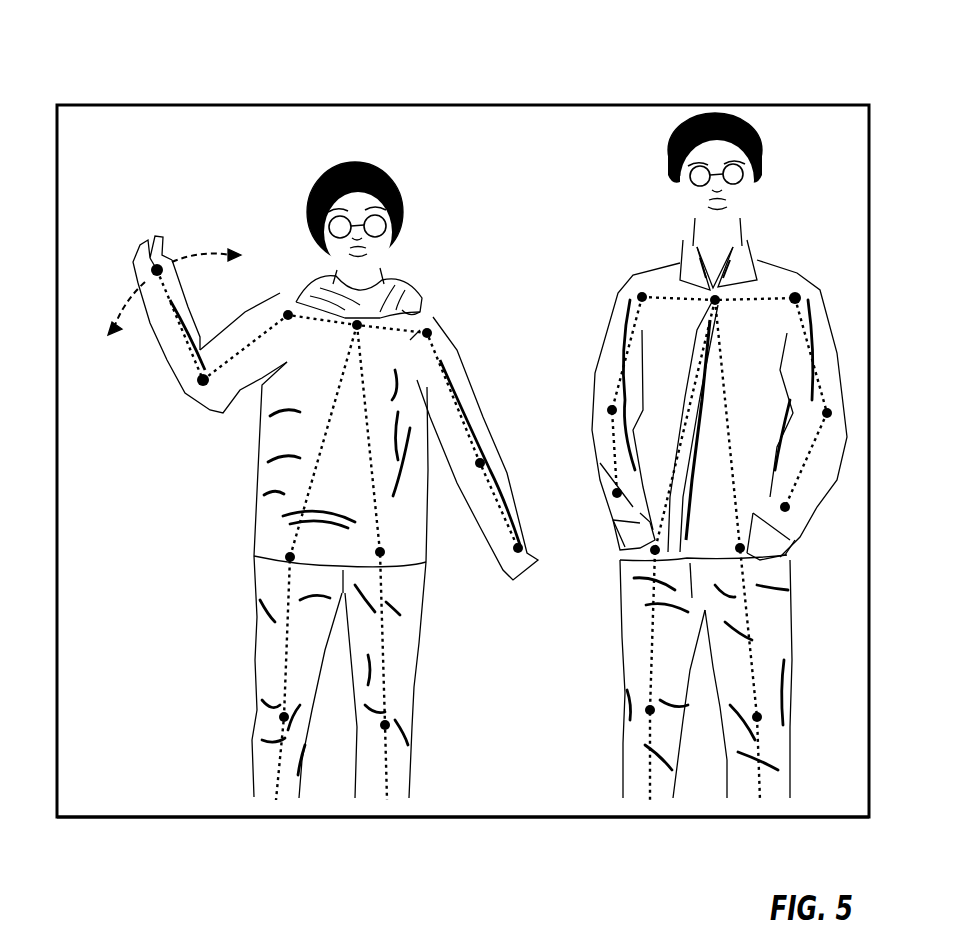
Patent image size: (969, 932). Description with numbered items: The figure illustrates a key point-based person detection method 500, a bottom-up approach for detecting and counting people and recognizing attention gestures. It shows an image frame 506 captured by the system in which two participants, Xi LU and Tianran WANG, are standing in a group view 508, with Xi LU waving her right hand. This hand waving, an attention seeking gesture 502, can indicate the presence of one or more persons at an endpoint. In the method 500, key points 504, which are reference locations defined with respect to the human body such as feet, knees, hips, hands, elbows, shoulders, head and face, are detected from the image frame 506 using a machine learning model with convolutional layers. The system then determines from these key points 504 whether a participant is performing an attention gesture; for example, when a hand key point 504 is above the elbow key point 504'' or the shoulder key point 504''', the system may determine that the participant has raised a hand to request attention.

The method 500 is at (219, 40).
The attention seeking gesture 502 is at (195, 252).
The key point 504 is at (90, 237).
The elbow key point 504'' is at (149, 412).
The shoulder key point 504''' is at (863, 267).
The image frame 506 is at (610, 104).
The group view 508 is at (157, 832).